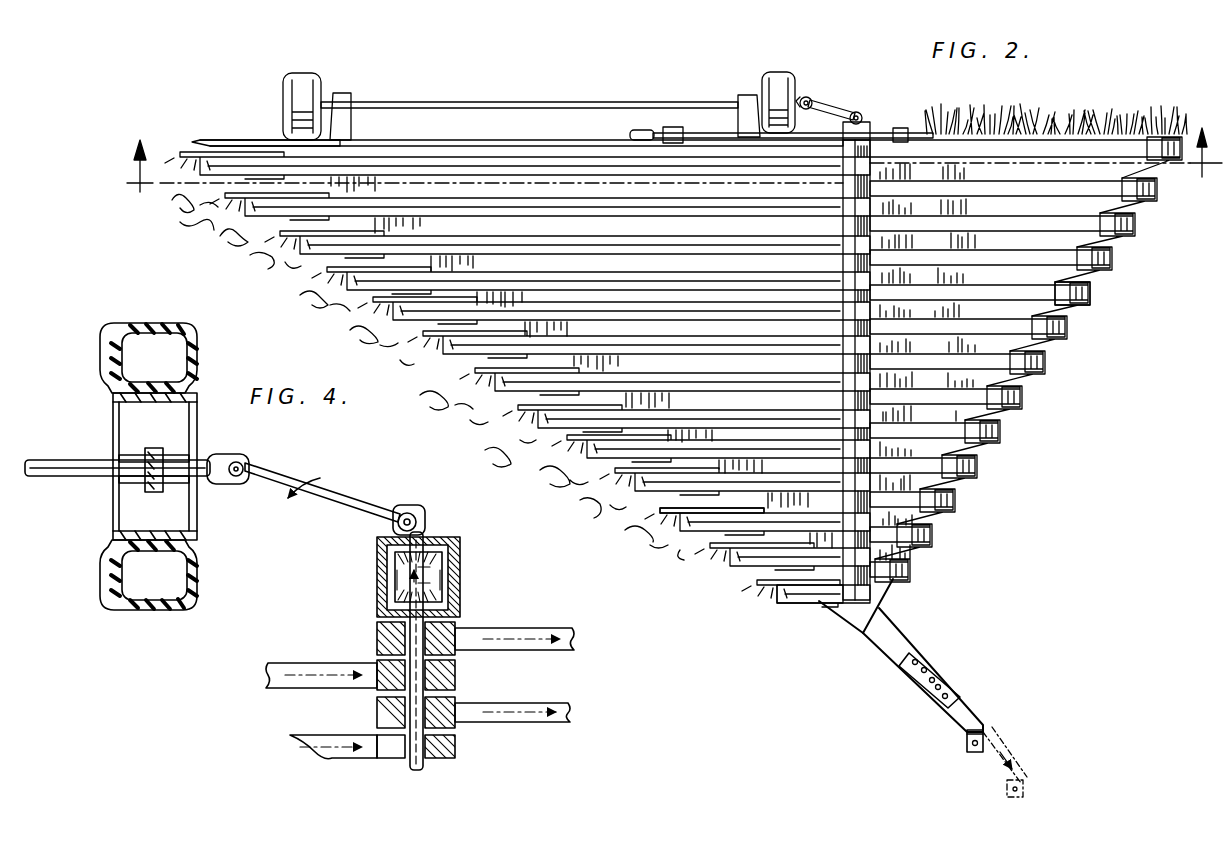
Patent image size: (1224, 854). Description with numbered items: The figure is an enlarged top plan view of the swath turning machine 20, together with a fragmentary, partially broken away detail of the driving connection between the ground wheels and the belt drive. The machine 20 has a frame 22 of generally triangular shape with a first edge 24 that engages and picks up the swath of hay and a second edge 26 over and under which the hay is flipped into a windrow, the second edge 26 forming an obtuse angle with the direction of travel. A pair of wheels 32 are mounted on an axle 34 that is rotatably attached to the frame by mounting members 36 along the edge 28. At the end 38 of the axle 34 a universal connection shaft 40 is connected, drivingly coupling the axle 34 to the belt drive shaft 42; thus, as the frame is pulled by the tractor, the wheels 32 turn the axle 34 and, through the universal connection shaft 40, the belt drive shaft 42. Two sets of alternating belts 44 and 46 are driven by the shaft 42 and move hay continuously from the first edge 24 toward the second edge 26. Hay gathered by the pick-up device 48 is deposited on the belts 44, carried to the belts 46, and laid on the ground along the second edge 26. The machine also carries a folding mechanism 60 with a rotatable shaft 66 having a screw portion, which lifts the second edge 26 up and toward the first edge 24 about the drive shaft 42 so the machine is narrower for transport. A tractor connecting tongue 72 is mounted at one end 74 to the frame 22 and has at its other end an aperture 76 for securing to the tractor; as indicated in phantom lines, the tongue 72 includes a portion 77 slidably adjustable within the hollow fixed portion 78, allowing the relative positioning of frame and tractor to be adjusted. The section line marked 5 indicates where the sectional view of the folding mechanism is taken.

In FIG. 2, the section line 5- 5 is at (668, 160).
In FIG. 2, the machine 20 is at (1033, 456).
In FIG. 2, the frame 22 is at (821, 600).
In FIG. 2, the first edge 24 is at (692, 535).
In FIG. 2, the second edge 26 is at (1072, 306).
In FIG. 2, the edge 28 is at (238, 142).
In FIG. 2, the wheels 32 is at (300, 74).
In FIG. 4, the wheels 32 is at (112, 420).
In FIG. 2, the axle 34 is at (540, 102).
In FIG. 2, the mounting members 36 is at (356, 116).
In FIG. 4, the mounting members 36 is at (76, 474).
In FIG. 2, the end of axle 38 is at (808, 98).
In FIG. 4, the end of axle 38 is at (212, 455).
In FIG. 2, the universal connection shaft 40 is at (840, 112).
In FIG. 4, the universal connection shaft 40 is at (350, 494).
In FIG. 2, the belt drive shaft 42 is at (874, 132).
In FIG. 4, the belt drive shaft 42 is at (410, 760).
In FIG. 2, the belts 44 is at (628, 274).
In FIG. 4, the belts 44 is at (335, 742).
In FIG. 2, the belts 46 is at (1078, 224).
In FIG. 4, the belts 46 is at (561, 698).
In FIG. 2, the pick-up device 48 is at (778, 615).
In FIG. 2, the folding mechanism 60 is at (871, 108).
In FIG. 2, the shaft 66 is at (690, 128).
In FIG. 2, the tractor connecting tongue 72 is at (942, 727).
In FIG. 2, the end of tongue 74 is at (895, 626).
In FIG. 2, the aperture 76 is at (973, 754).
In FIG. 2, the slidable portion 77 is at (978, 730).
In FIG. 2, the hollow fixed portion 78 is at (944, 684).